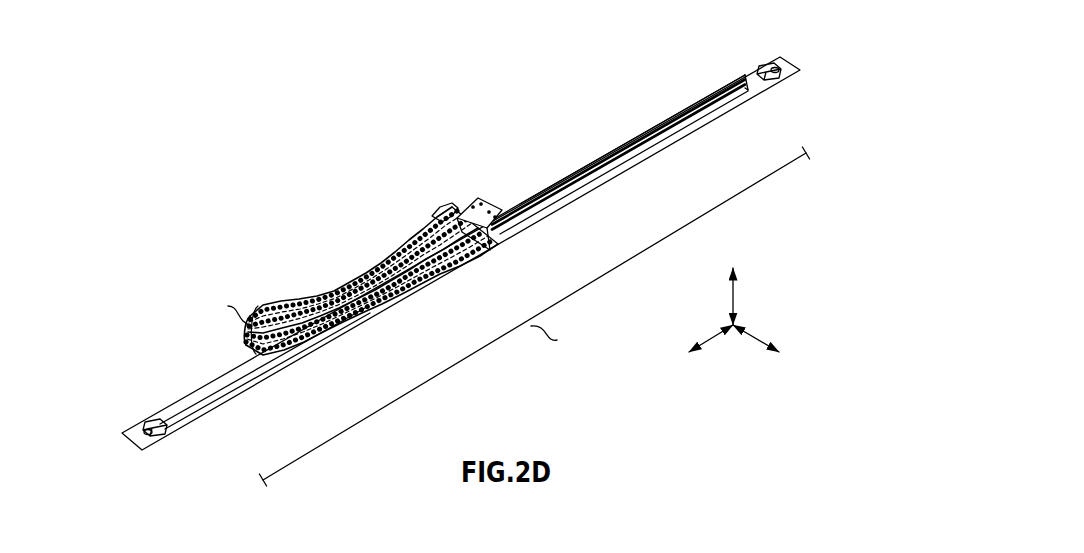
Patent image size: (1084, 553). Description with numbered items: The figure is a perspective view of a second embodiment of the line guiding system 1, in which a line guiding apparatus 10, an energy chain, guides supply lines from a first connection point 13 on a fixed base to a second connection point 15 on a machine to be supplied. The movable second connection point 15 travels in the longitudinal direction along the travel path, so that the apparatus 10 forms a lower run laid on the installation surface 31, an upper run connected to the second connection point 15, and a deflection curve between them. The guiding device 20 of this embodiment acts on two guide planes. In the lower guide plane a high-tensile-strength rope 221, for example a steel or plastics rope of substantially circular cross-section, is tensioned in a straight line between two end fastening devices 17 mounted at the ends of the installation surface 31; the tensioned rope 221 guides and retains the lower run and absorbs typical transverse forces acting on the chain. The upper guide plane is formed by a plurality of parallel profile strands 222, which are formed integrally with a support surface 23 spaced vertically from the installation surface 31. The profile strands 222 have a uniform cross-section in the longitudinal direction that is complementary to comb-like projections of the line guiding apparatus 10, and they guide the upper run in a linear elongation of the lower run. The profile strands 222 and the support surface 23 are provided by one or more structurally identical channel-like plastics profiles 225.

The line guiding system 1 is at (222, 160).
The line guiding apparatus 10 is at (320, 243).
The first connection point 13 is at (504, 250).
The second connection point 15 is at (443, 207).
The fastening devices 17 is at (151, 422).
The guiding device 20 is at (194, 433).
The support surface 23 is at (549, 182).
The installation surface 31 is at (233, 375).
The rope 221 is at (195, 406).
The profile strands 222 is at (647, 126).
The channel-like plastics profiles 225 is at (707, 117).